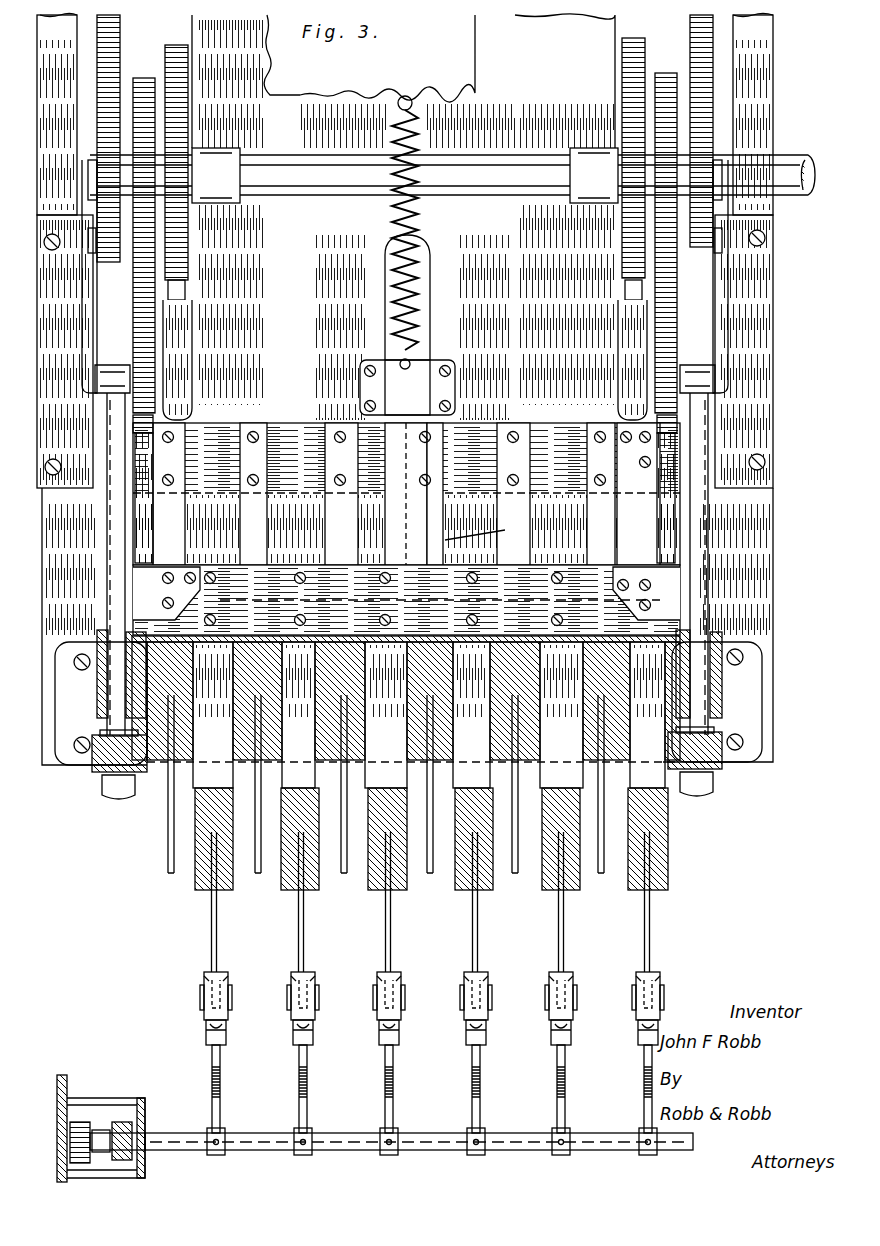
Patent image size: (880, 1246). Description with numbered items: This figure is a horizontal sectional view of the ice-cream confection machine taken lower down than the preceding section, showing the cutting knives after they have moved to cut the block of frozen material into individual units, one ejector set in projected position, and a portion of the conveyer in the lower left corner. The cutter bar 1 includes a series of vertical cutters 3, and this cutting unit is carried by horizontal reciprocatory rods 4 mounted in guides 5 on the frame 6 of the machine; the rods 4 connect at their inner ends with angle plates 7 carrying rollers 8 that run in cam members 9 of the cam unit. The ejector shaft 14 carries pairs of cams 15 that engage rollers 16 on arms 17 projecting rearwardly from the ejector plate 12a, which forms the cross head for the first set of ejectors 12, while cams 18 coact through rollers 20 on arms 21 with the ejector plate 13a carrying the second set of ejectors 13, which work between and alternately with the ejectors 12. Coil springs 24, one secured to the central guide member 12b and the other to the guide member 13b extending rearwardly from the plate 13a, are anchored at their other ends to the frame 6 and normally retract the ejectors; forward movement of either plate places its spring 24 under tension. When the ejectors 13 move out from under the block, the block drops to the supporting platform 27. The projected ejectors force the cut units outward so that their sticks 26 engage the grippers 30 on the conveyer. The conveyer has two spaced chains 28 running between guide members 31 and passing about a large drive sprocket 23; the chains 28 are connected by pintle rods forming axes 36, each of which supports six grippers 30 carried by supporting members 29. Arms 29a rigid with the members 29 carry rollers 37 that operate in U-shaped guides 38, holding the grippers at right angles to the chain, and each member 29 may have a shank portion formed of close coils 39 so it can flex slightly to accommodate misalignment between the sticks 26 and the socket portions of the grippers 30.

The cutter bar 1 is at (722, 776).
The vertical cutters 3 is at (182, 770).
The horizontal reciprocatory rods 4 is at (120, 598).
The guides 5 is at (100, 690).
The frame 6 is at (750, 535).
The angle plates 7 is at (90, 333).
The rollers 8 is at (103, 258).
The cam members 9 is at (112, 58).
The first set of ejectors 12 is at (690, 860).
The ejector plate 12a is at (340, 580).
The central guide member 12b is at (400, 450).
The second set of ejectors 13 is at (638, 720).
The ejector plate 13a is at (478, 428).
The guide member 13b is at (386, 300).
The ejector shaft 14 is at (490, 180).
The cams 15 is at (150, 62).
The rollers 16 is at (152, 425).
The arms 17 is at (142, 455).
The cams 18 is at (615, 212).
The rollers 20 is at (188, 292).
The arms 21 is at (185, 355).
The drive sprocket 23 is at (575, 417).
The coil springs 24 is at (420, 266).
The sticks 26 is at (212, 868).
The supporting platform 27 is at (250, 768).
The chain 28 is at (122, 1122).
The supporting members 29 is at (308, 1112).
The arms 29a is at (128, 1130).
The grippers 30 is at (218, 1003).
The guide members 31 is at (145, 1110).
The axes 36 is at (280, 1133).
The rollers 37 is at (100, 1130).
The U-shaped guides 38 is at (82, 1122).
The close coils 39 is at (220, 1078).